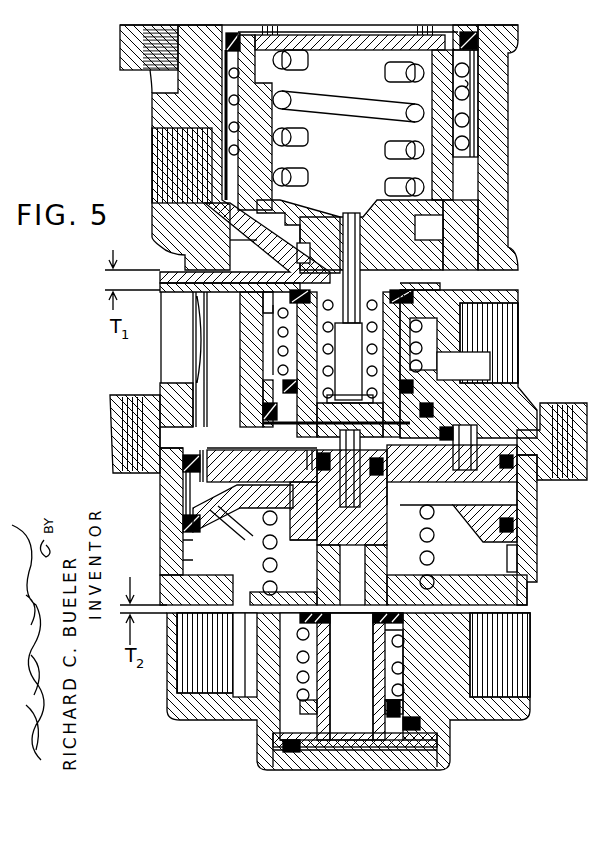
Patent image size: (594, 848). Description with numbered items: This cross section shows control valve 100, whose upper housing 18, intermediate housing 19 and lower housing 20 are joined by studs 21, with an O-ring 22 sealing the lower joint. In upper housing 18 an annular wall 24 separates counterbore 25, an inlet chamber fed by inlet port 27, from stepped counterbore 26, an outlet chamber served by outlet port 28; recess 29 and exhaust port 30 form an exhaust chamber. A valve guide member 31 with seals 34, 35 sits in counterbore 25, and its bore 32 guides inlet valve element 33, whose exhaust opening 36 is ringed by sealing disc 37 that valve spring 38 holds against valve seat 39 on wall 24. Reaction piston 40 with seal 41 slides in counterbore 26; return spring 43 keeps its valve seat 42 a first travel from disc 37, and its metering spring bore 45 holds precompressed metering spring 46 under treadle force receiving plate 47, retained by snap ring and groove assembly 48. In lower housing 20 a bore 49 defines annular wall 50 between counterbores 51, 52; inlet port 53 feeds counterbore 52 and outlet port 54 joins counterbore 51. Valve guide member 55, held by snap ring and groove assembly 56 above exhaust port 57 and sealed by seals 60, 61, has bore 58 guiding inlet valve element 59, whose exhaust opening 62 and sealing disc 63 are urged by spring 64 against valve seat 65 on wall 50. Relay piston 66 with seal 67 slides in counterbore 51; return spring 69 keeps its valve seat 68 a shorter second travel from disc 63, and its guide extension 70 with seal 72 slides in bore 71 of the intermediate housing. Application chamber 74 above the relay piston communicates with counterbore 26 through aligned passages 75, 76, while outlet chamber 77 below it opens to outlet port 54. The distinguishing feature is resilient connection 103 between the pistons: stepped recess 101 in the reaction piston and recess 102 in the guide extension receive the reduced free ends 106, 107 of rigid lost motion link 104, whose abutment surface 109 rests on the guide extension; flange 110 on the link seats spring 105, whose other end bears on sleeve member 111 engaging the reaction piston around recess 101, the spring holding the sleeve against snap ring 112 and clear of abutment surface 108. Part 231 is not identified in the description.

The control valve 100 is at (92, 51).
The upper housing 18 is at (496, 134).
The intermediate housing 19 is at (110, 440).
The lower housing 20 is at (528, 588).
The studs 21 is at (560, 404).
The sealing member or O-ring 22 is at (192, 452).
The passage 231 is at (456, 287).
The annular wall or partition 24 is at (236, 252).
The counterbore 25 is at (268, 305).
The stepped counterbore 26 is at (472, 100).
The inlet port 27 is at (498, 313).
The outlet or working port 28 is at (165, 133).
The recess 29 is at (255, 452).
The exhaust port 30 is at (168, 378).
The valve guide member 31 is at (268, 369).
The bore 32 is at (392, 408).
The inlet valve element 33 is at (422, 357).
The seal 34 is at (263, 413).
The seal 35 is at (283, 390).
The axial bore or exhaust opening 36 is at (350, 363).
The annular resilient sealing member or disc 37 is at (418, 294).
The valve spring 38 is at (284, 334).
The valve seat 39 is at (286, 277).
The reaction piston or valve control member 40 is at (362, 163).
The seal 41 is at (225, 41).
The valve seat 42 is at (246, 245).
The return spring 43 is at (466, 68).
The metering spring bore 45 is at (430, 133).
The precompressed metering spring 46 is at (330, 105).
The retainer or treadle force receiving plate 47 is at (370, 50).
The snap ring and groove assembly 48 is at (335, 25).
The bore 49 is at (419, 565).
The annular wall or partition 50 is at (483, 578).
The counterbore 51 is at (517, 557).
The counterbore 52 is at (283, 660).
The inlet port 53 is at (495, 622).
The outlet or working port 54 is at (185, 695).
The valve guide member 55 is at (300, 752).
The snap ring and groove assembly 56 is at (440, 760).
The exhaust port 57 is at (416, 763).
The bore 58 is at (392, 684).
The inlet valve element 59 is at (362, 684).
The seal 60 is at (438, 733).
The seal 61 is at (412, 709).
The axial bore or exhaust opening 62 is at (371, 716).
The annular resilient sealing member or disc 63 is at (329, 664).
The spring 64 is at (403, 643).
The valve seat 65 is at (317, 571).
The relay piston or valve control member 66 is at (360, 566).
The seal 67 is at (515, 527).
The valve seat 68 is at (351, 590).
The return spring 69 is at (263, 567).
The guide extension 70 is at (298, 504).
The bore 71 is at (405, 494).
The seal 72 is at (386, 458).
The expansible application or control chamber 74 is at (183, 498).
The passage 75 is at (478, 447).
The passage 76 is at (472, 417).
The outlet or working chamber 77 is at (183, 556).
The stepped recess 101 is at (360, 262).
The recess 102 is at (307, 470).
The resilient connection 103 is at (432, 362).
The rigid force transmitting member or lost motion linkage 104 is at (350, 420).
The resilient force transmitting member or spring 105 is at (300, 346).
The free end portion 106 is at (348, 212).
The free end portion 107 is at (347, 497).
The abutment surface 108 is at (412, 331).
The abutment surface 109 is at (385, 447).
The flange 110 is at (340, 440).
The spring retainer or sleeve member 111 is at (350, 349).
The snap ring 112 is at (289, 154).